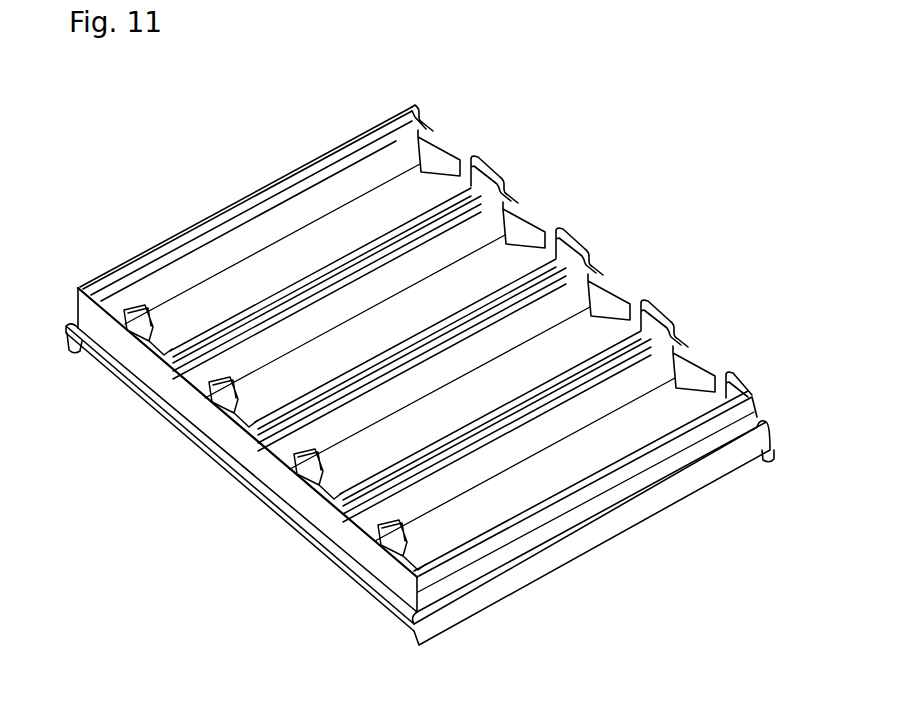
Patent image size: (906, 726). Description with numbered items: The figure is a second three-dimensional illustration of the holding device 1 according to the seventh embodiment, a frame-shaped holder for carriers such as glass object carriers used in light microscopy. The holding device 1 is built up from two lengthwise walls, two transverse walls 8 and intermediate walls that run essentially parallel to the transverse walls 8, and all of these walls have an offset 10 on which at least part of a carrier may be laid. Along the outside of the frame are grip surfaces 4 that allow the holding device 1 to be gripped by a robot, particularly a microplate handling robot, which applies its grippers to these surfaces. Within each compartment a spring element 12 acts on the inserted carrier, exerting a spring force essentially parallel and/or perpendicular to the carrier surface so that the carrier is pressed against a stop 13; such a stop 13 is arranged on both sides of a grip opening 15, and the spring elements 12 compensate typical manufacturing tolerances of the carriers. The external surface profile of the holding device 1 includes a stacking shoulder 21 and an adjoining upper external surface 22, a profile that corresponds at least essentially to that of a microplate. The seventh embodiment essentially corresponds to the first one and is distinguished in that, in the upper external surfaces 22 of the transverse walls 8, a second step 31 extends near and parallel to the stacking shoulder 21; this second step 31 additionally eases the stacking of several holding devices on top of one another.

The holding device 1 is at (60, 152).
The grip surfaces 4 is at (247, 456).
The transverse walls 8 is at (599, 545).
The offset 10 is at (109, 299).
The spring element 12 is at (212, 395).
The stop 13 is at (463, 165).
The grip opening 15 is at (620, 300).
The stacking shoulder 21 is at (683, 425).
The upper external surface 22 is at (628, 494).
The second step 31 is at (497, 553).